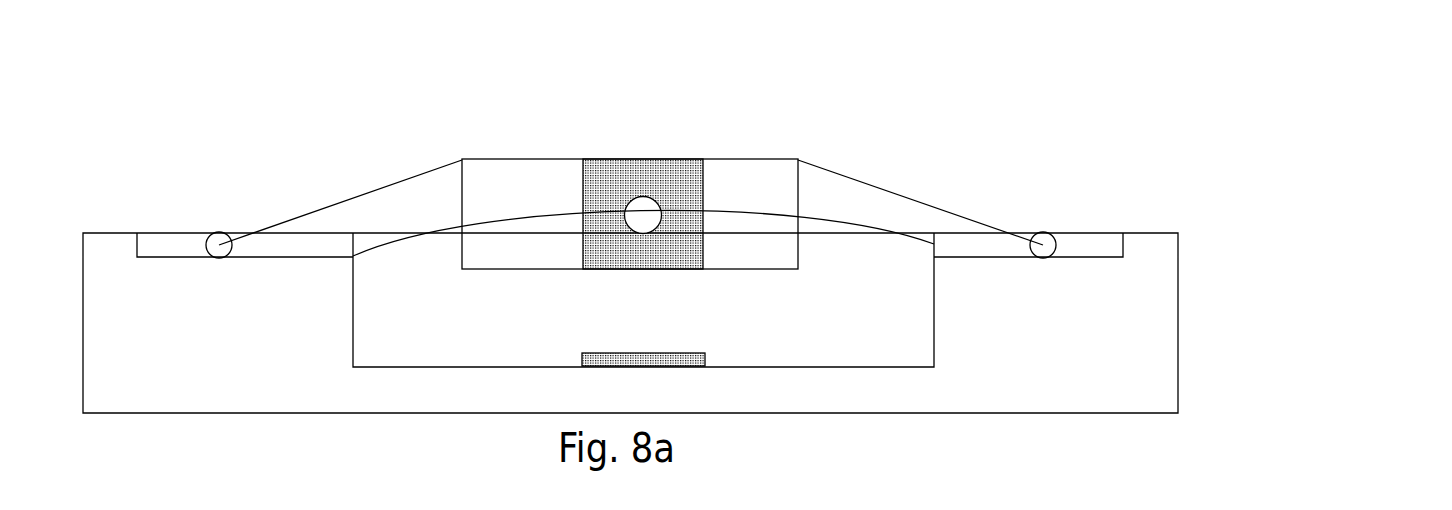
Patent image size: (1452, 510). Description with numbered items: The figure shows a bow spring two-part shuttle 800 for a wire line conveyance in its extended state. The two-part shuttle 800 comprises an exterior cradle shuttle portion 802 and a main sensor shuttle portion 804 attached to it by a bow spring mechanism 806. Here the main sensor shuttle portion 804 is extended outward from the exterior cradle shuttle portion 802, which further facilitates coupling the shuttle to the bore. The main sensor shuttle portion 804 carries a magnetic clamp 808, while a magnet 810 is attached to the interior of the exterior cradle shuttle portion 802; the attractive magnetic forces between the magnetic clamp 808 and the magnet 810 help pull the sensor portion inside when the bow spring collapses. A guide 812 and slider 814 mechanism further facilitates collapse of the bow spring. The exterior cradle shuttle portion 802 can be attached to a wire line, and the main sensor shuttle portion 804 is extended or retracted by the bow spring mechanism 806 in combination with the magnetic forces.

The two-part shuttle 800 is at (1217, 267).
The exterior cradle shuttle portion 802 is at (1137, 337).
The main sensor shuttle portion 804 is at (718, 159).
The bow spring mechanism 806 is at (877, 228).
The magnetic clamp 808 is at (600, 159).
The magnet 810 is at (703, 366).
The guide 812 is at (372, 193).
The slider 814 is at (1090, 232).